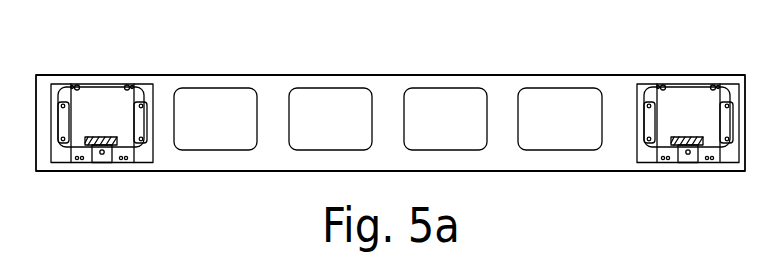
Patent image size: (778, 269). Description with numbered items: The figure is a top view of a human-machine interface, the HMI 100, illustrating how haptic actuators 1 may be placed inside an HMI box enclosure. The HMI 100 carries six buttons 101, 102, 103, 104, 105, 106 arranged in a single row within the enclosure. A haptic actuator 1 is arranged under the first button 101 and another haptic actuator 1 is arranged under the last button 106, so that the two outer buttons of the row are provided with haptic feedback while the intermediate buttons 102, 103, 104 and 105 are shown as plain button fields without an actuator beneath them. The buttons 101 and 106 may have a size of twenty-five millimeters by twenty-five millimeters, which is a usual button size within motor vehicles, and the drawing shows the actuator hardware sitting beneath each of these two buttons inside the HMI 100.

The haptic actuator 1 is at (143, 89).
The HMI 100 is at (80, 178).
The button 101 is at (78, 130).
The button 102 is at (240, 130).
The button 103 is at (307, 130).
The button 104 is at (422, 130).
The button 105 is at (584, 130).
The button 106 is at (663, 130).